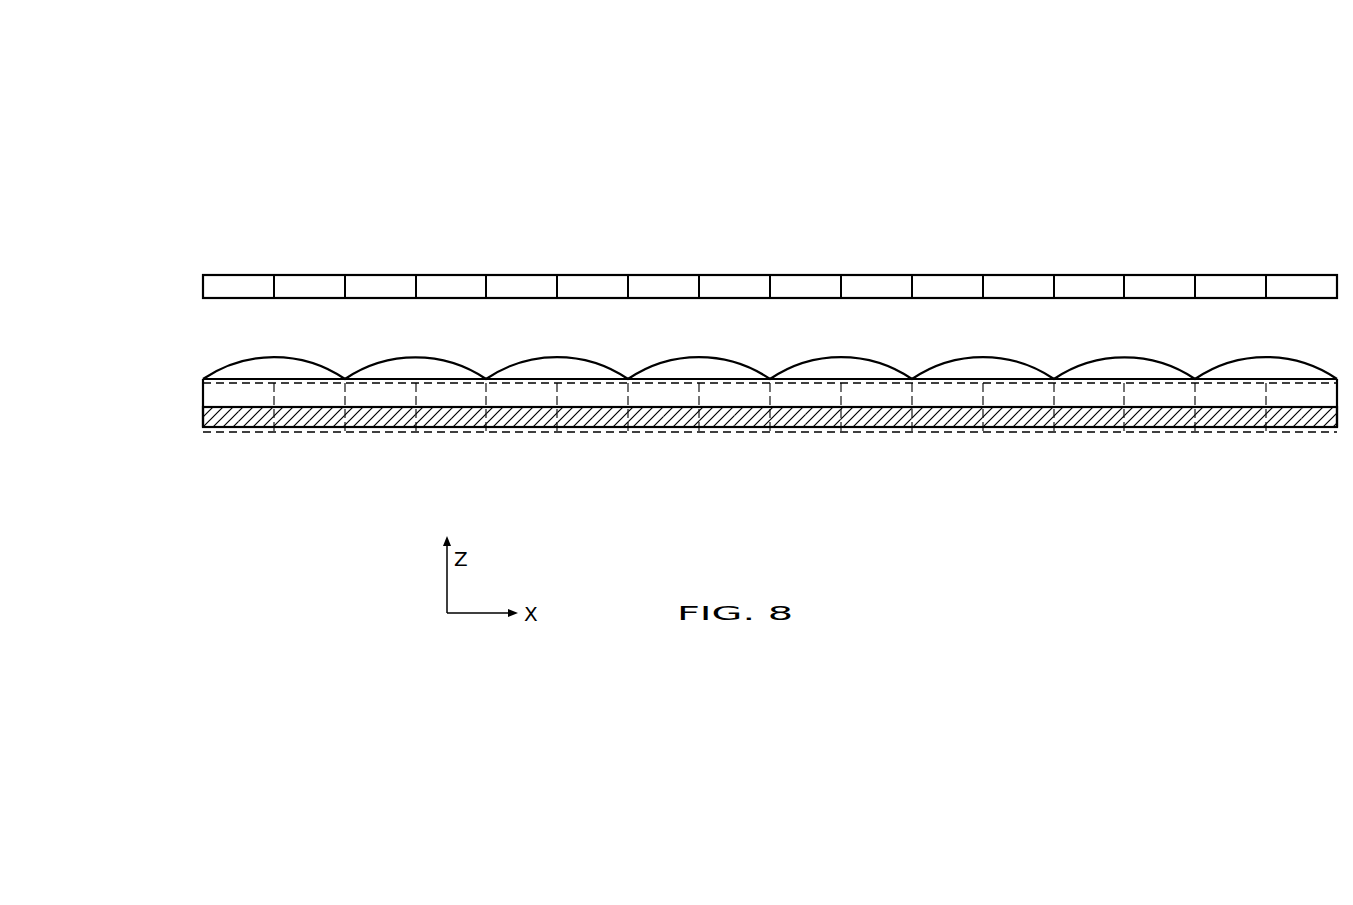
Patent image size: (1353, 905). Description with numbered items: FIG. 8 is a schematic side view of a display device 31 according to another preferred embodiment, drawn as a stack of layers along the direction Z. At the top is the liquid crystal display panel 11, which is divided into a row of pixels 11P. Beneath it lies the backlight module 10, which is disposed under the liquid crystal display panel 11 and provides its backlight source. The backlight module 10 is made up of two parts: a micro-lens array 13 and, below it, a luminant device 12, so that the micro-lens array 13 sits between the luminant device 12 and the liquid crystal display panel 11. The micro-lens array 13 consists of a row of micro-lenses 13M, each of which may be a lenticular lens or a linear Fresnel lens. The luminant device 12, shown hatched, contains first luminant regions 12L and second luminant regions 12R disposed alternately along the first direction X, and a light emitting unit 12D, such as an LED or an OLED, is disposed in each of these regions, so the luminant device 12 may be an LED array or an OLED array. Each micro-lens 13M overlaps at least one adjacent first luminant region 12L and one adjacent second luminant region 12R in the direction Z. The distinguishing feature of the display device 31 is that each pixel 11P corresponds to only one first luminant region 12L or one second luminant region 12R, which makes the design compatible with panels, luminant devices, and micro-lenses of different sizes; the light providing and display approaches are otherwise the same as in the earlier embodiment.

The display device 31 is at (1152, 94).
The backlight module 10 is at (145, 362).
The liquid crystal display panel 11 is at (188, 277).
The pixels 11P is at (242, 287).
The micro-lens array 13 is at (188, 360).
The micro-lenses 13M is at (273, 368).
The luminant device 12 is at (188, 405).
The light emitting units 12D is at (232, 427).
The first luminant regions 12L is at (253, 433).
The second luminant regions 12R is at (324, 433).